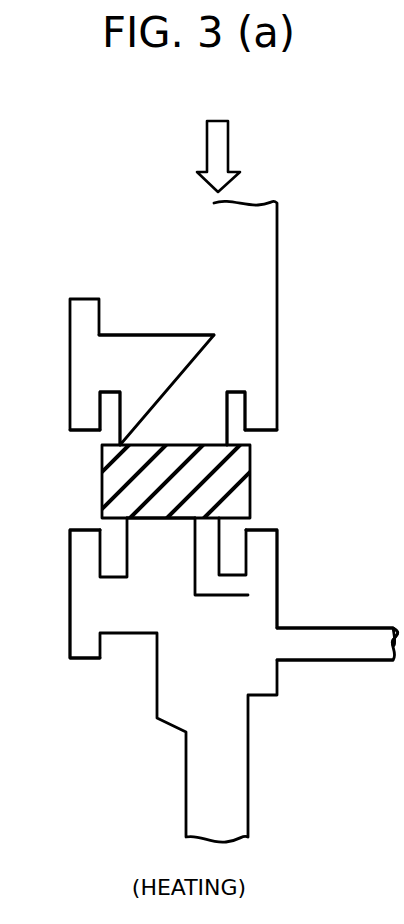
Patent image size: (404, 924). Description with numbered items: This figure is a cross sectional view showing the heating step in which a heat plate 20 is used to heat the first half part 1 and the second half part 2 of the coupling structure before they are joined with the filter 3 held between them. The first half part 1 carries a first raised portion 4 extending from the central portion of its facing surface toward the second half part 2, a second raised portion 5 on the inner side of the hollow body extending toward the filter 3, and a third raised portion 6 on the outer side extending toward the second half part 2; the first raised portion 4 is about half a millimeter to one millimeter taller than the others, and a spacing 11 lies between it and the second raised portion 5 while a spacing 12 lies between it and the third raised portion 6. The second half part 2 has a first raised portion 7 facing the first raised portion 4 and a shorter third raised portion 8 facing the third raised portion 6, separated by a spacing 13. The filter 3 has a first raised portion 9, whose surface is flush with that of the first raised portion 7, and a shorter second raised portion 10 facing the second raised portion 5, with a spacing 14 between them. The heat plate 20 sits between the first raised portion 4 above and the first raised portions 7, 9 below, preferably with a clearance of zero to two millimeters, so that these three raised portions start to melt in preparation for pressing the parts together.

The first half part 1 is at (212, 262).
The second half part 2 is at (184, 763).
The filter 3 is at (329, 662).
The first raised portion 4 is at (200, 428).
The second raised portion 5 is at (255, 432).
The third raised portion 6 is at (97, 431).
The first raised portion 7 is at (150, 555).
The third raised portion 8 is at (80, 529).
The first raised portion 9 is at (207, 560).
The second raised portion 10 is at (262, 525).
The spacing 11 is at (237, 397).
The spacing 12 is at (107, 397).
The spacing 13 is at (115, 565).
The spacing 14 is at (236, 574).
The heat plate 20 is at (255, 479).